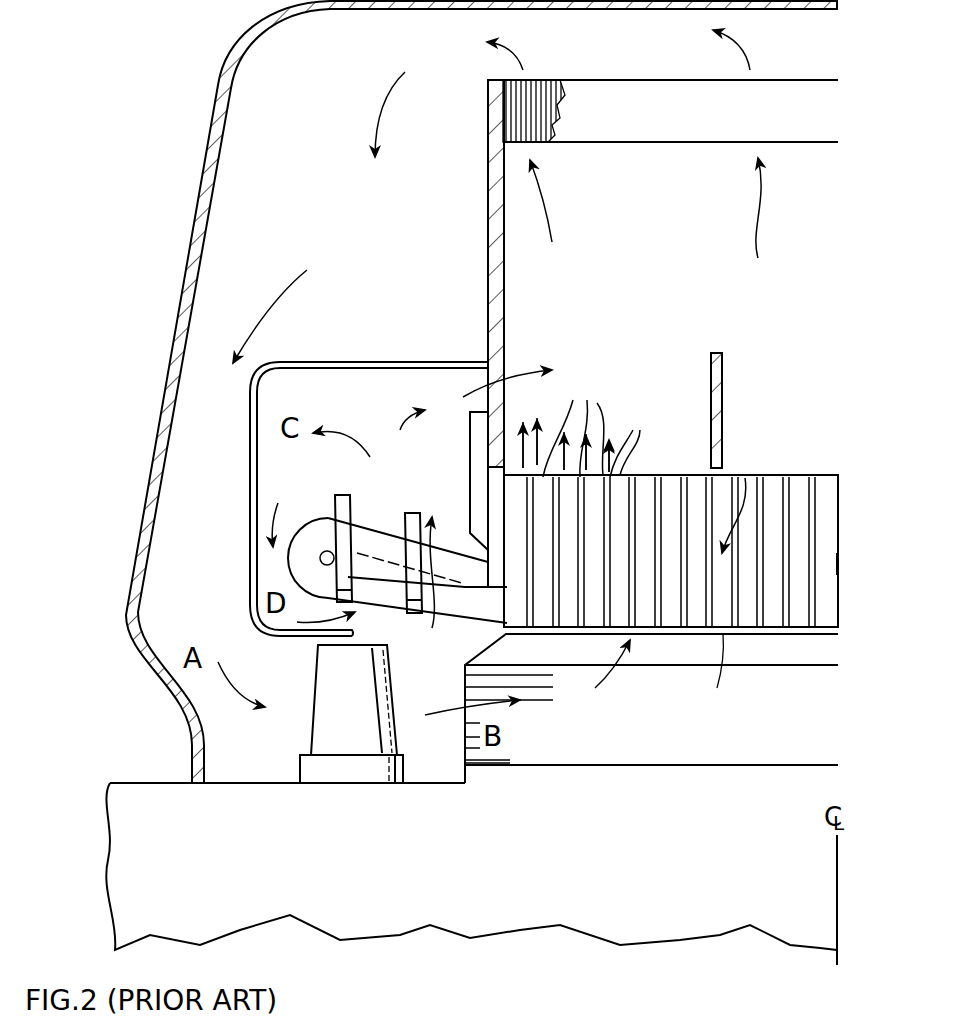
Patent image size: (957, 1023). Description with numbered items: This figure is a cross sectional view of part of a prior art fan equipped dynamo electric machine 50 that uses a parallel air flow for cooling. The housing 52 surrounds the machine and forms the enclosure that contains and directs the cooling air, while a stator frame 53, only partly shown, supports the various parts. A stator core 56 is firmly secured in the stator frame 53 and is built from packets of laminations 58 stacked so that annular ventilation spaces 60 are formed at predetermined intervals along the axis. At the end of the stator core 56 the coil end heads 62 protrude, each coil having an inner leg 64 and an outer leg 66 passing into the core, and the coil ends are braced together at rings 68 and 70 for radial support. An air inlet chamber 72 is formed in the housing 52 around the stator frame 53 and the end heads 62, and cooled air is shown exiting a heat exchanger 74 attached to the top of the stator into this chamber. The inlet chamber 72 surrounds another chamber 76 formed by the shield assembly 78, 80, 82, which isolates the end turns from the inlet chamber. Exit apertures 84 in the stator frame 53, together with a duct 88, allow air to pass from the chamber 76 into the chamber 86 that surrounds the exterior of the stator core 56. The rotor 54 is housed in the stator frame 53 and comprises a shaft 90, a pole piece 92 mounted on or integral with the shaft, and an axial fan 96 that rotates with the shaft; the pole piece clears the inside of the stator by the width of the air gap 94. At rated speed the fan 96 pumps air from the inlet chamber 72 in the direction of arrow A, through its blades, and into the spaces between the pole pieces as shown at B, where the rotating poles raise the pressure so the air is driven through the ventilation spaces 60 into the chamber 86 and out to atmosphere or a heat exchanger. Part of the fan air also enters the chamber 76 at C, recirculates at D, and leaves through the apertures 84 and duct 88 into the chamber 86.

The fan equipped dynamo electric machine 50 is at (590, 866).
The housing 52 is at (222, 82).
The stator frame 53 is at (492, 297).
The rotor 54 is at (615, 749).
The stator core 56 is at (745, 478).
The packets of laminations 58 is at (568, 422).
The annular ventilation spaces 60 is at (643, 438).
The coil end heads 62 is at (318, 528).
The inner leg 64 is at (440, 610).
The outer leg 66 is at (450, 560).
The bracing ring 68 is at (342, 495).
The bracing ring 70 is at (410, 513).
The air inlet chamber 72 is at (305, 200).
The heat exchanger 74 is at (617, 115).
The chamber 76 is at (385, 397).
The shield assembly 78 is at (305, 362).
The shield assembly 80 is at (250, 470).
The shield assembly 82 is at (295, 636).
The exit apertures 84 is at (500, 385).
The chamber 86 is at (665, 296).
The duct 88 is at (470, 465).
The shaft 90 is at (135, 790).
The pole piece 92 is at (545, 712).
The air gap 94 is at (708, 678).
The axial fan 96 is at (325, 710).